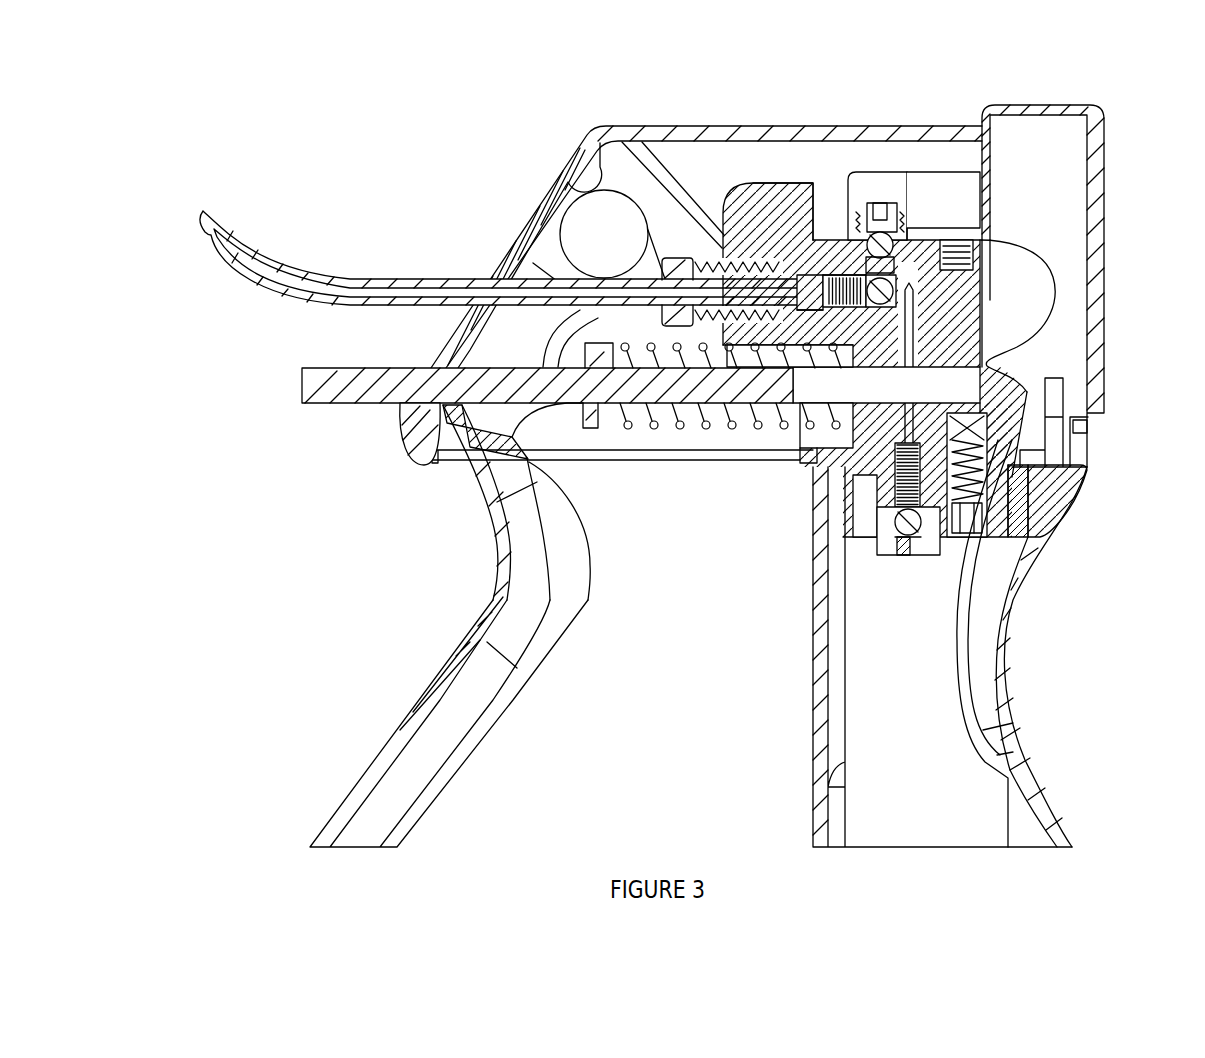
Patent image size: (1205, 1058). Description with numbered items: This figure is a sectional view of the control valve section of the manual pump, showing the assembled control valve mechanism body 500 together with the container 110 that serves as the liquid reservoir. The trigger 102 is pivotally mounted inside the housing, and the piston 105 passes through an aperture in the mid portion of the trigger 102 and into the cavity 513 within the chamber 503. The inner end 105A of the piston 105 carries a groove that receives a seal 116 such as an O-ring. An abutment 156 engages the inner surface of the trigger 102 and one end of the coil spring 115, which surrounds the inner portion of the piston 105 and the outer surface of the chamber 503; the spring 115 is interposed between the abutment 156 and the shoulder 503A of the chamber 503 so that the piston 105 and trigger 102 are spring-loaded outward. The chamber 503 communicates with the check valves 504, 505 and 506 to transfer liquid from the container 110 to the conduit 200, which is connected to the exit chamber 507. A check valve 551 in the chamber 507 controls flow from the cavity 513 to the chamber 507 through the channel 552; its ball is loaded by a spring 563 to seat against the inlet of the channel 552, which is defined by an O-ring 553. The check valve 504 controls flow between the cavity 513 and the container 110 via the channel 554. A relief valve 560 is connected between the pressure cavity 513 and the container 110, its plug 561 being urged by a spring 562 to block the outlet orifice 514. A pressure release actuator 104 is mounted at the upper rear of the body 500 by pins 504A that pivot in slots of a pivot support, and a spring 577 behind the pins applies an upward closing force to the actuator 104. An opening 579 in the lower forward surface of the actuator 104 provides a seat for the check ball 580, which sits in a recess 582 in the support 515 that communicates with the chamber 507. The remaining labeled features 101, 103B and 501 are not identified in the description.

The handle grip 101 is at (1015, 650).
The trigger 102 is at (425, 815).
The housing half 103B is at (623, 165).
The actuator 104 is at (1105, 170).
The piston 105 is at (330, 408).
The inner end of piston 105A is at (806, 410).
The container 110 is at (840, 690).
The spring 115 is at (785, 412).
The seal 116 is at (772, 400).
The abutment 156 is at (587, 430).
The conduit 200 is at (360, 272).
The control valve mechanism body 500 is at (870, 345).
The plug 501 is at (880, 203).
The chamber 503 is at (797, 400).
The shoulder of chamber 503A is at (840, 395).
The check valve 504 is at (930, 553).
The pins 504A is at (922, 192).
The check valve 505 is at (1022, 470).
The check valve 506 is at (706, 310).
The exit chamber 507 is at (748, 187).
The cavity 513 is at (920, 344).
The outlet orifice 514 is at (985, 401).
The support 515 is at (822, 262).
The check valve 551 is at (805, 215).
The channel 552 is at (985, 323).
The O-ring 553 is at (898, 200).
The channel 554 is at (920, 420).
The relief valve 560 is at (985, 443).
The plug 561 is at (972, 435).
The spring 562 is at (977, 495).
The spring 563 is at (835, 268).
The spring 577 is at (992, 302).
The opening 579 is at (862, 212).
The check ball 580 is at (858, 195).
The recess 582 is at (840, 262).